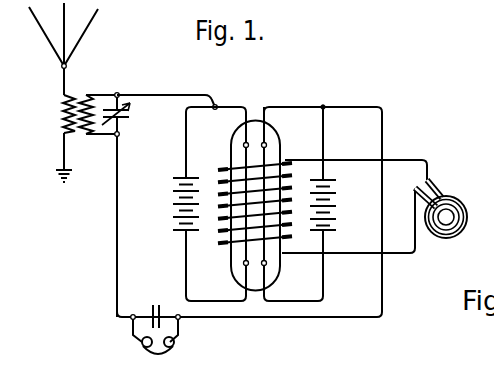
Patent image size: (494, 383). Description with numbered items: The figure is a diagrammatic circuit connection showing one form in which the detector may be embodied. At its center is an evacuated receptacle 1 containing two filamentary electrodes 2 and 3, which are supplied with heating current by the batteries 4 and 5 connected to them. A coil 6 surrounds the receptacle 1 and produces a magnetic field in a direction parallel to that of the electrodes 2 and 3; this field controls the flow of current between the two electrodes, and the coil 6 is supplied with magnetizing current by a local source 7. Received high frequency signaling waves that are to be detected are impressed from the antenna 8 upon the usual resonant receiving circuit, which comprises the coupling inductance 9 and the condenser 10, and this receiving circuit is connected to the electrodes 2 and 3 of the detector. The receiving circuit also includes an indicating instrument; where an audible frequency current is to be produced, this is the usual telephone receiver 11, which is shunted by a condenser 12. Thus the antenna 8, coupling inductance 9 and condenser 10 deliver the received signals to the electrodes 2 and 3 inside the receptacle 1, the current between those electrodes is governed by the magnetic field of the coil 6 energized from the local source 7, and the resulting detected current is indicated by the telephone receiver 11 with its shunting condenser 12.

The evacuated receptacle 1 is at (255, 116).
The filamentary electrode 2 is at (268, 151).
The filamentary electrode 3 is at (242, 152).
The battery 4 is at (338, 198).
The battery 5 is at (175, 203).
The coil 6 is at (224, 250).
The local source 7 is at (458, 205).
The antenna 8 is at (89, 27).
The coupling inductance 9 is at (87, 91).
The condenser 10 is at (119, 104).
The telephone receiver 11 is at (176, 346).
The condenser 12 is at (154, 303).